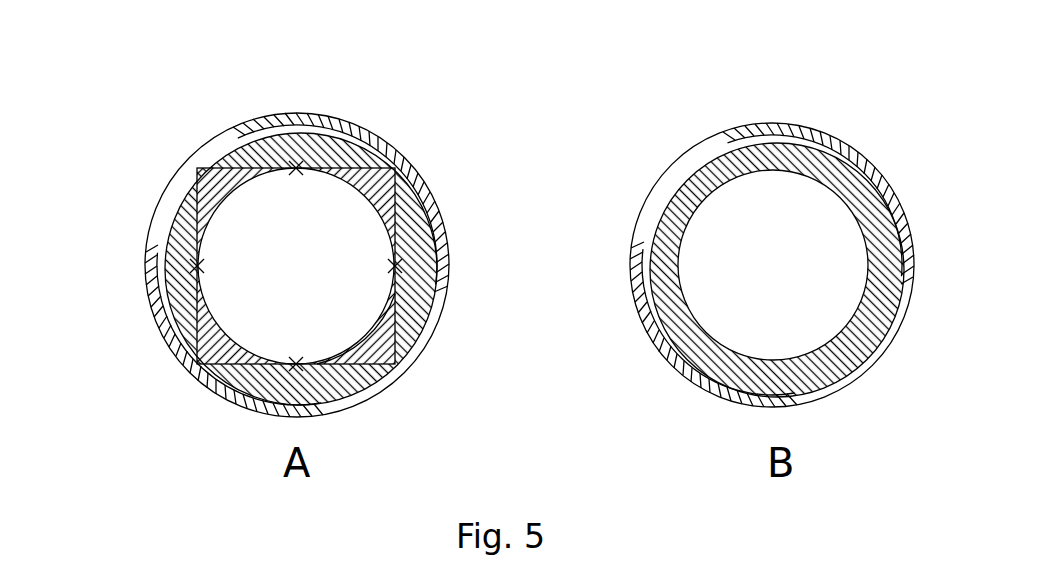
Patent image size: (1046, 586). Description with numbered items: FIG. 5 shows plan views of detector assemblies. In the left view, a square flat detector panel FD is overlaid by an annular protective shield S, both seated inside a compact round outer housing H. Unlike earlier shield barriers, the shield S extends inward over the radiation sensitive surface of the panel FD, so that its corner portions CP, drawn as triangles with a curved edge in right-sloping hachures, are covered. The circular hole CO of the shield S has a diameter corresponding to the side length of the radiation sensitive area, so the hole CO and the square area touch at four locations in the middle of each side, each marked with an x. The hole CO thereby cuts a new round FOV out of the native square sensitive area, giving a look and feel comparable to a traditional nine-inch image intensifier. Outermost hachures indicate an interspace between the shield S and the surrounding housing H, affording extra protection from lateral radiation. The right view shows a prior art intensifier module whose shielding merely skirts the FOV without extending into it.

The outer housing H is at (145, 243).
The annular protective shield S is at (428, 292).
The flat detector panel FD is at (397, 222).
The hole of the annular shield CO is at (303, 203).
The corner portions CP is at (207, 168).
The field of view FOV is at (803, 210).